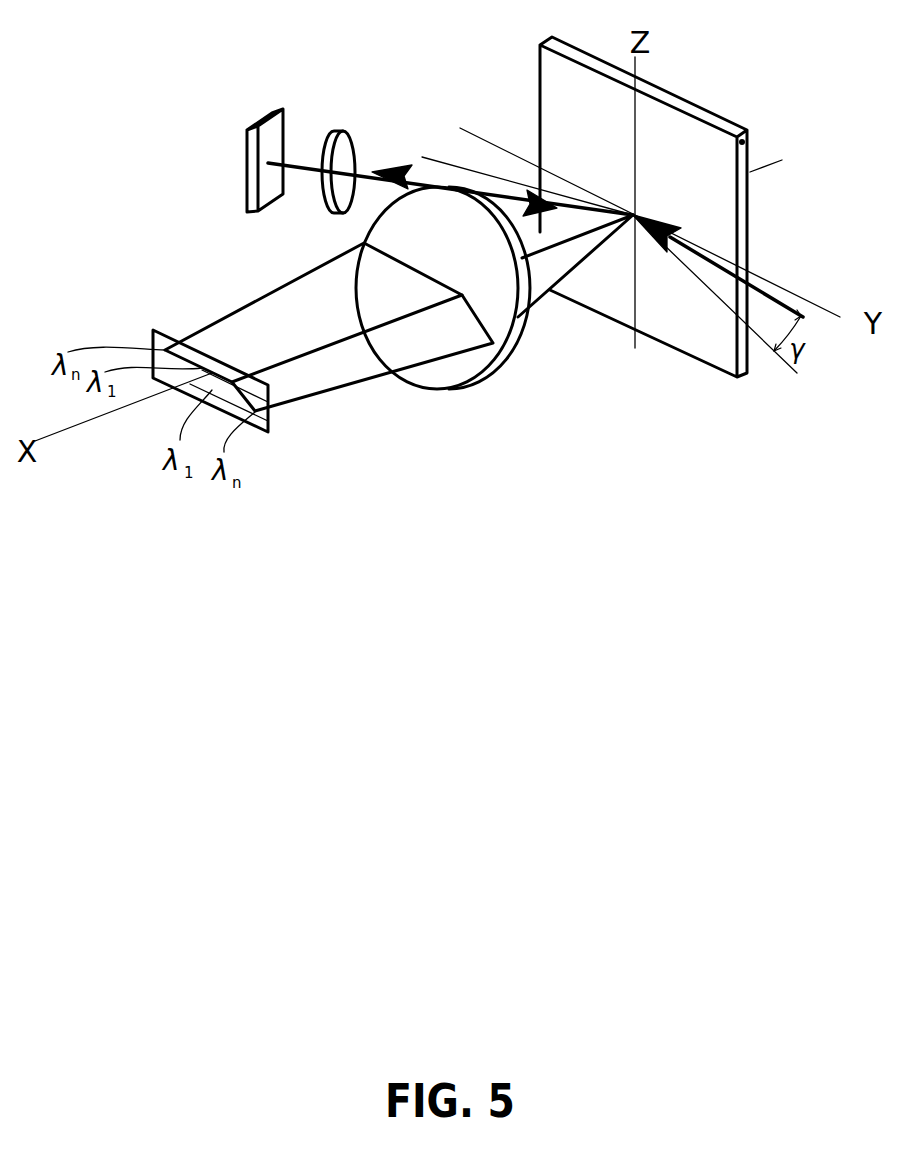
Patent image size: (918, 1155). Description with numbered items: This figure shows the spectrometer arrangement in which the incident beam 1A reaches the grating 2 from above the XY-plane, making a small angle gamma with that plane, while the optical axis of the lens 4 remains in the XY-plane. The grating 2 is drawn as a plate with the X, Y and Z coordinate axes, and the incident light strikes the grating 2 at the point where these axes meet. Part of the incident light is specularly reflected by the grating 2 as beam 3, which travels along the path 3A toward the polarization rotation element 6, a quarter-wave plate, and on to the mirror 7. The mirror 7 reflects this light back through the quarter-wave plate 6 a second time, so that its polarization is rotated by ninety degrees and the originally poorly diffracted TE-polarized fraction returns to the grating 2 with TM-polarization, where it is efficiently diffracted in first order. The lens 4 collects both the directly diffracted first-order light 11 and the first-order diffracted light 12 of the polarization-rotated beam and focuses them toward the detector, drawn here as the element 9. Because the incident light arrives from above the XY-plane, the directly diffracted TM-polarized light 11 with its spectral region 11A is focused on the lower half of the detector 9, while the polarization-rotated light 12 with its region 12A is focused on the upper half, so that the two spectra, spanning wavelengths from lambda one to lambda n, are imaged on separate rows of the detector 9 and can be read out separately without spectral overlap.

The incident light beam 1A is at (723, 302).
The grating 2 is at (742, 142).
The beam 3 is at (373, 173).
The light beam 3A is at (481, 175).
The lens 4 is at (493, 343).
The polarization rotation element 6 is at (350, 133).
The mirror 7 is at (250, 152).
The light source 9 is at (270, 413).
The first-order diffracted light 11 is at (338, 373).
The light emitting region 11A is at (200, 388).
The first-order diffracted light 12 is at (272, 312).
The light emitting region 12A is at (360, 310).